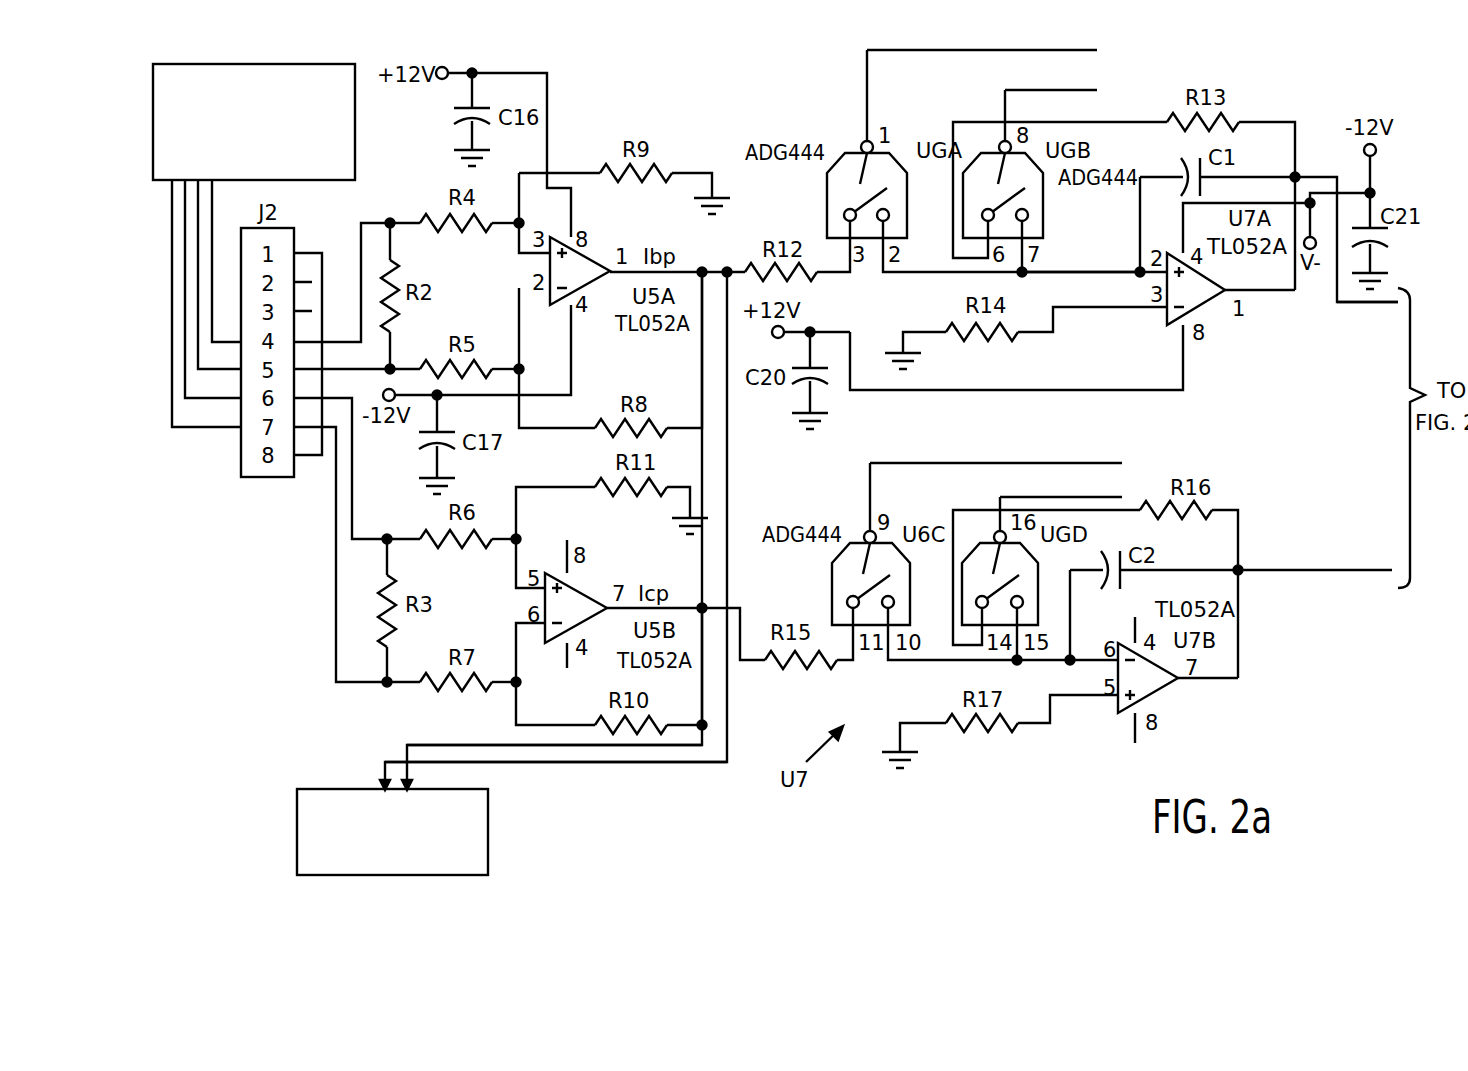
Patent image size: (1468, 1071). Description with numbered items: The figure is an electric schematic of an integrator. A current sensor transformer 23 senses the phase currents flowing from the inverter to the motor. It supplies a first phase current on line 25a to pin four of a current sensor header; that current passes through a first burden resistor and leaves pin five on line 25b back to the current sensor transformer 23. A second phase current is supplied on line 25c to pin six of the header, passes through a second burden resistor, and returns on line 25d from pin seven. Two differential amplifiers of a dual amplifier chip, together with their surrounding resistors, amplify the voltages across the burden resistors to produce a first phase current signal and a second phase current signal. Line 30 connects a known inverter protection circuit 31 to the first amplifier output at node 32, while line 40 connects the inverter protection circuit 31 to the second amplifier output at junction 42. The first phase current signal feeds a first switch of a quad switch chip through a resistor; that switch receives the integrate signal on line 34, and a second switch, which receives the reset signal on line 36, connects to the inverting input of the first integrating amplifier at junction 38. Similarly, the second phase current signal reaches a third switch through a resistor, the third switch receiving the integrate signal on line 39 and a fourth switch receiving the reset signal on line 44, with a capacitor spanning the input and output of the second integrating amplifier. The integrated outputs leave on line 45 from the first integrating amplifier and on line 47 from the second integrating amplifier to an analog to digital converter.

The current sensor transformer 23 is at (152, 121).
The line 25a is at (212, 243).
The line 25b is at (198, 280).
The line 25c is at (185, 323).
The line 25d is at (172, 375).
The line 30 is at (620, 766).
The inverter protection circuit 31 is at (490, 821).
The node 32 is at (722, 265).
The line 34 is at (946, 52).
The line 36 is at (1004, 93).
The junction 38 is at (1025, 277).
The line 39 is at (928, 462).
The line 40 is at (428, 744).
The junction 42 is at (700, 722).
The line 44 is at (1000, 496).
The line 45 is at (1375, 306).
The line 47 is at (1305, 574).